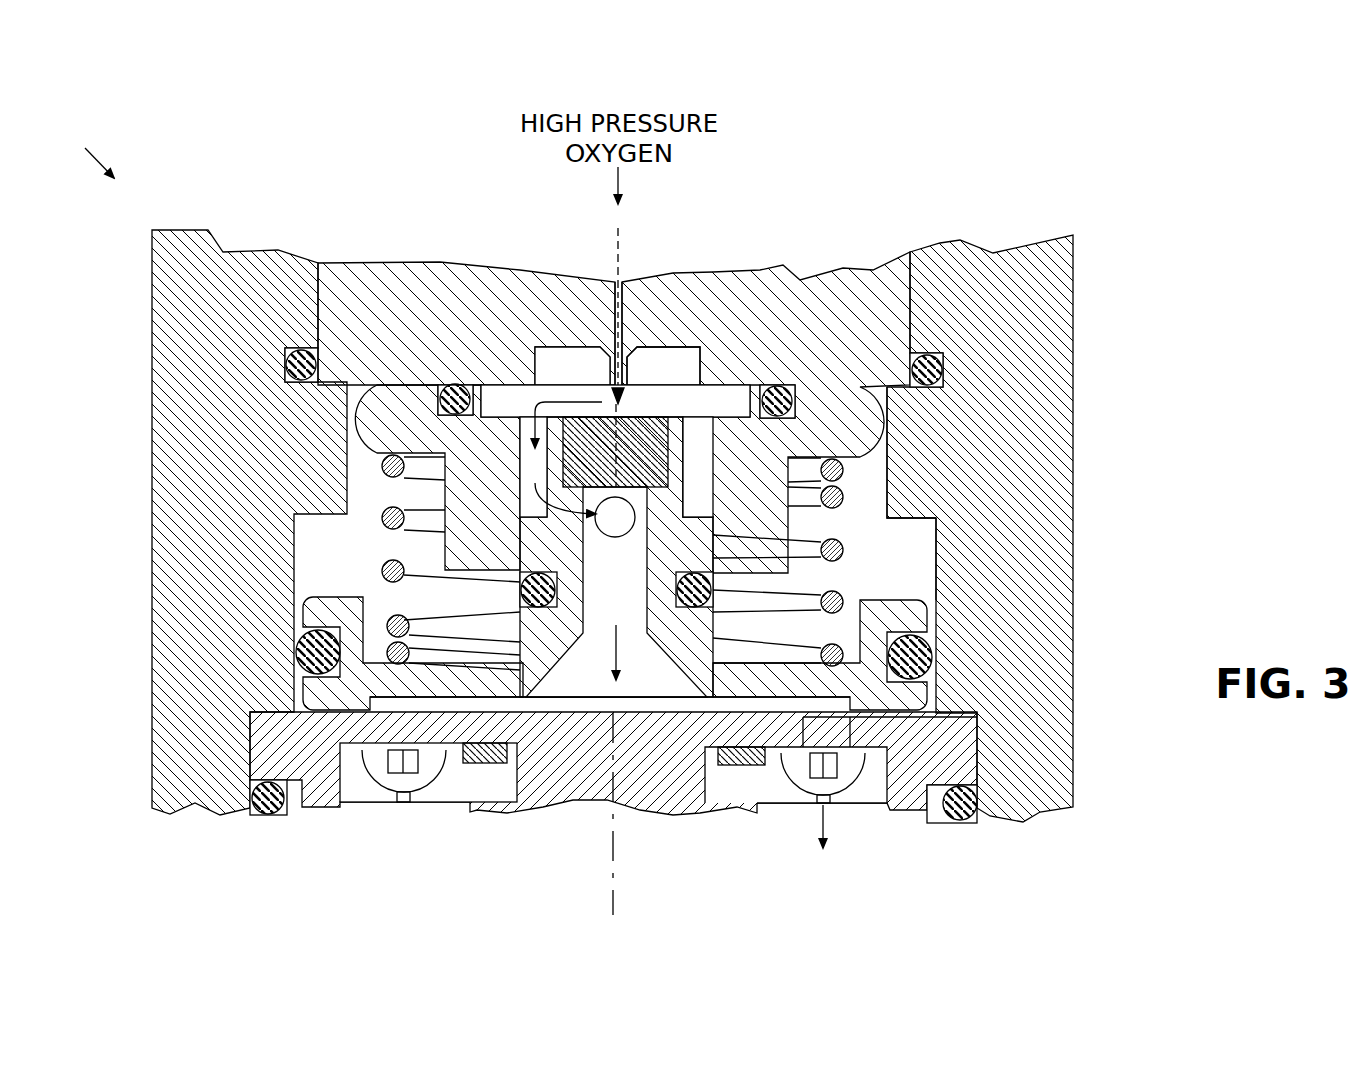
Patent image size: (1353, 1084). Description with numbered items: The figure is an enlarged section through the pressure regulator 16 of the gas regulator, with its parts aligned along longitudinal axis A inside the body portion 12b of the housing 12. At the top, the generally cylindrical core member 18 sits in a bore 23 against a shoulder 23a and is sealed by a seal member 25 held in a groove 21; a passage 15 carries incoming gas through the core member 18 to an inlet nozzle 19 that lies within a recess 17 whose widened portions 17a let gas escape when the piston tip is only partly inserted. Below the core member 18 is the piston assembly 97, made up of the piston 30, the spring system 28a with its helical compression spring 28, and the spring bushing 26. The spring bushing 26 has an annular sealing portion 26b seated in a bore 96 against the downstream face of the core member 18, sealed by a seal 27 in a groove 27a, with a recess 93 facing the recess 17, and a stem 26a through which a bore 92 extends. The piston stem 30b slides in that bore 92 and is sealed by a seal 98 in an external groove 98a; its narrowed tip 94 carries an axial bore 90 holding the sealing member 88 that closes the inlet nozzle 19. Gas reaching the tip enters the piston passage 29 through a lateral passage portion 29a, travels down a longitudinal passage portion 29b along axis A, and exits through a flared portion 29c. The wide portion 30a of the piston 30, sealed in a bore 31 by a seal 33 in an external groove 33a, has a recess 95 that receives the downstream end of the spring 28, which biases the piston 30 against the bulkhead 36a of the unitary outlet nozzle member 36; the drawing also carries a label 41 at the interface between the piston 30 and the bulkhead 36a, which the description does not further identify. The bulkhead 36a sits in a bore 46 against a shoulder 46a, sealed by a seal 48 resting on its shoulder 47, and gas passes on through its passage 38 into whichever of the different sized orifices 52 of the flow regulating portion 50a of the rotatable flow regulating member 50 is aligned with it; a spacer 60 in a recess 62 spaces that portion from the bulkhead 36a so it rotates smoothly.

The housing 12 is at (670, 526).
The body portion 12b is at (1062, 348).
The passage 15 is at (612, 285).
The pressure regulator 16 is at (85, 148).
The recess 17 is at (684, 307).
The widened portions 17a is at (680, 353).
The core member 18 is at (780, 266).
The inlet nozzle 19 is at (610, 363).
The groove 21 is at (295, 352).
The bore 23 is at (885, 285).
The shoulder 23a is at (866, 383).
The seal member 25 is at (199, 293).
The spring bushing 26 is at (347, 332).
The stem 26a is at (460, 497).
The sealing portion 26b is at (378, 400).
The seal 27 is at (455, 384).
The groove 27a is at (467, 307).
The helical compression spring 28 is at (946, 631).
The spring system 28a is at (872, 530).
The passage 29 is at (640, 544).
The lateral passage portion 29a is at (617, 547).
The longitudinal passage portion 29b is at (640, 627).
The flared portion 29c is at (616, 592).
The piston 30 is at (296, 617).
The wide portion 30a is at (296, 617).
The piston stem 30b is at (520, 542).
The bore 31 is at (937, 672).
The seal 33 is at (206, 670).
The external groove 33a is at (268, 711).
The unitary outlet nozzle member 36 is at (711, 787).
The bulkhead 36a is at (957, 742).
The passage 38 is at (803, 730).
The gap 41 is at (727, 703).
The bore 46 is at (619, 787).
The shoulder 46a is at (252, 788).
The shoulder 47 is at (985, 770).
The seal 48 is at (1008, 829).
The flow regulating member 50 is at (455, 790).
The flow regulating portion 50a is at (403, 817).
The orifices 52 is at (402, 803).
The spacer 60 is at (614, 814).
The recess 62 is at (523, 753).
The sealing member 88 is at (627, 433).
The axial bore 90 is at (661, 456).
The bore 92 is at (700, 447).
The recess 93 is at (514, 430).
The tip 94 is at (713, 481).
The recess 95 is at (382, 658).
The bore 96 is at (887, 460).
The piston assembly 97 is at (923, 582).
The seal 98 is at (409, 562).
The external groove 98a is at (778, 558).
The longitudinal axis A is at (612, 893).